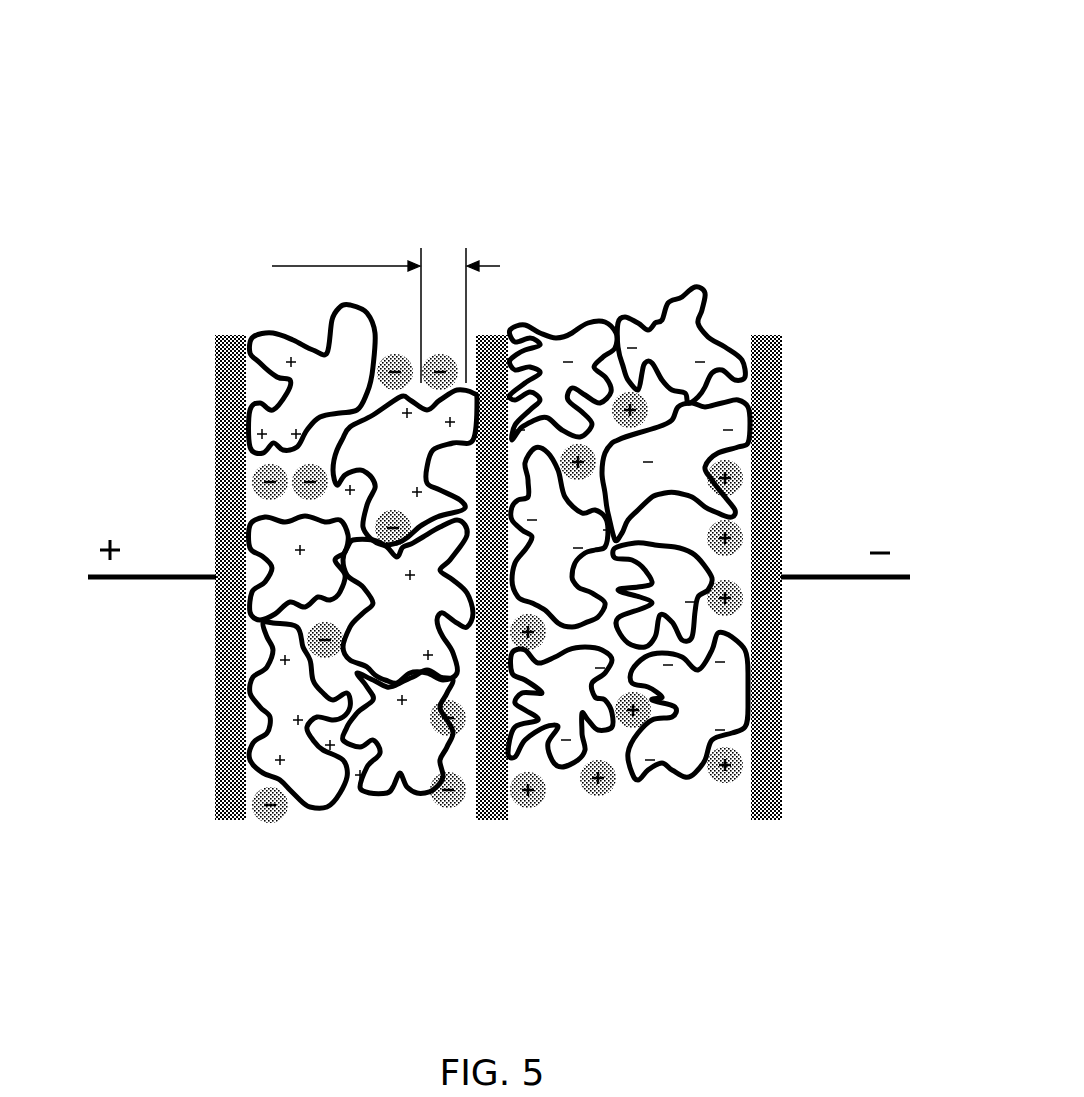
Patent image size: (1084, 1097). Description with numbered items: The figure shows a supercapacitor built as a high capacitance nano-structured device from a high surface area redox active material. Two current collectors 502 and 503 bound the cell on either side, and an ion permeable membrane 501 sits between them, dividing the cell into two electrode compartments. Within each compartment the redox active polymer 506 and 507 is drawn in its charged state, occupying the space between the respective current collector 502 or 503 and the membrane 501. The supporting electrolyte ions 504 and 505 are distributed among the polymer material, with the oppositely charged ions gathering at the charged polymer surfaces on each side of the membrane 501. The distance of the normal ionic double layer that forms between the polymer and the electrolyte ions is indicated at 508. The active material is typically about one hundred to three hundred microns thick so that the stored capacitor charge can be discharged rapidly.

The ion permeable membrane 501 is at (490, 337).
The current collector 502 is at (230, 334).
The current collector 503 is at (768, 334).
The supporting electrolyte ion 504 is at (447, 810).
The supporting electrolyte ion 505 is at (530, 810).
The redox active polymer 506 is at (367, 800).
The redox active polymer 507 is at (670, 780).
The distance of the normal ionic double layer 508 is at (298, 194).